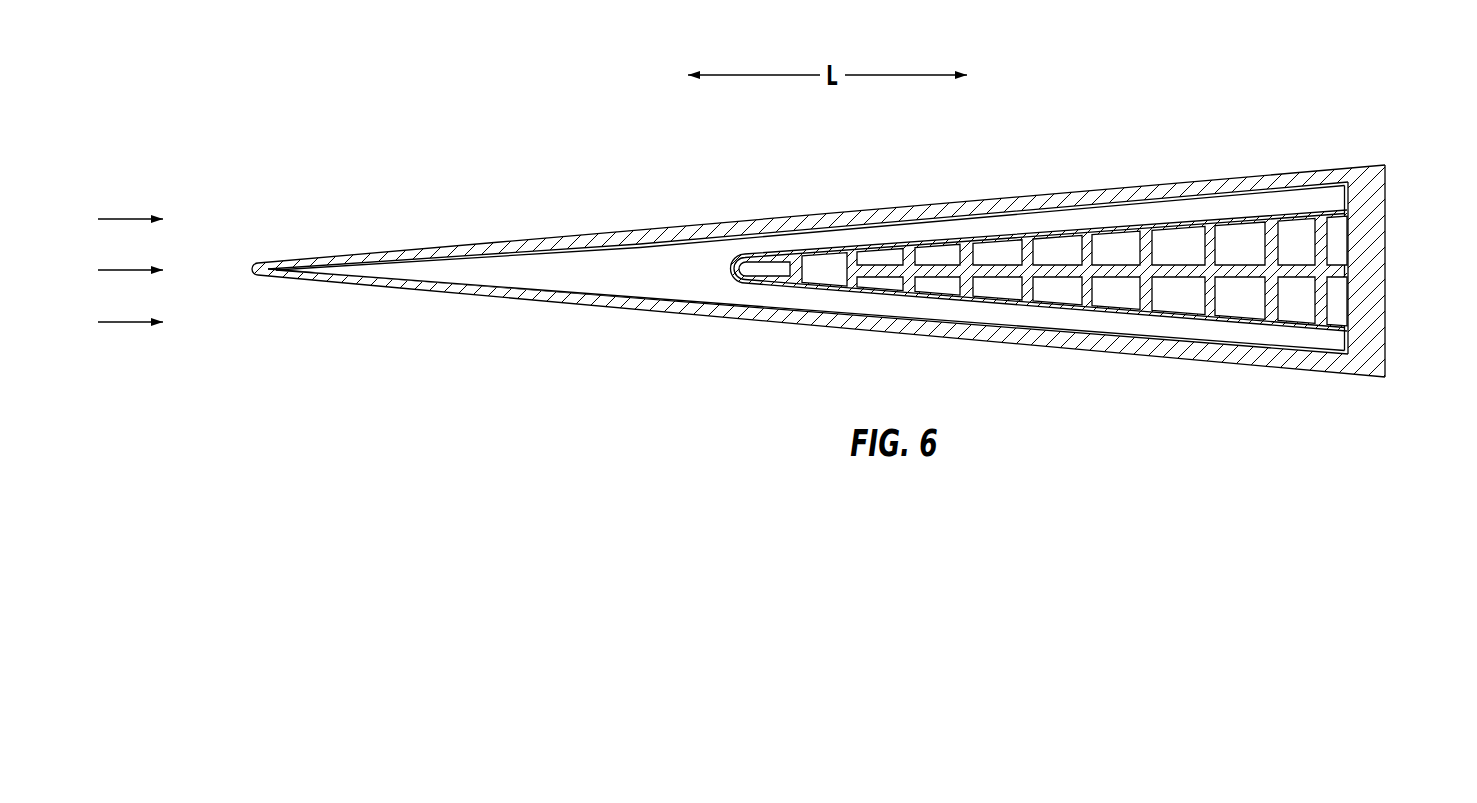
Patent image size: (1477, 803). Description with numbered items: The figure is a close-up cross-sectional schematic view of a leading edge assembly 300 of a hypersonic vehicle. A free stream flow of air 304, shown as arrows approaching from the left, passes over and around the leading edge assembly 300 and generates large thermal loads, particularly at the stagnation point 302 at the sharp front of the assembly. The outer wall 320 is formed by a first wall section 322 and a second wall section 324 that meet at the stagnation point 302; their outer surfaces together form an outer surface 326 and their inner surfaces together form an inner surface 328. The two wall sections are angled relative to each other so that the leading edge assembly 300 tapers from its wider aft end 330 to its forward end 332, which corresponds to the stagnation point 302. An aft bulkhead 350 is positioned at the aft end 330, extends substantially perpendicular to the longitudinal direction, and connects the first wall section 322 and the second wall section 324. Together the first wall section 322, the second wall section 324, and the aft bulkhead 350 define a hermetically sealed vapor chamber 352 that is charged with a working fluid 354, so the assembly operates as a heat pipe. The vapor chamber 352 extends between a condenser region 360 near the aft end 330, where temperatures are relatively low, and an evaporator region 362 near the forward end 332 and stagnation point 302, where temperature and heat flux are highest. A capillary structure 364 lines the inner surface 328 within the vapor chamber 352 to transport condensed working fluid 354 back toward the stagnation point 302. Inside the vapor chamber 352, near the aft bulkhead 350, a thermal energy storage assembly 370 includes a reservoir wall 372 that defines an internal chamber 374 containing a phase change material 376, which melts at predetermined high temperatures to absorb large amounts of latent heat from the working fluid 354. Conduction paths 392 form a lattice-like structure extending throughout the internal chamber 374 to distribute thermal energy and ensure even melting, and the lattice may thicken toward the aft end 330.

The leading edge assembly 300 is at (818, 200).
The stagnation point 302 is at (219, 225).
The free stream flow of air 304 is at (130, 316).
The outer wall 320 is at (942, 186).
The first wall section 322 is at (808, 208).
The second wall section 324 is at (892, 342).
The outer surface 326 is at (379, 209).
The inner surface 328 is at (810, 331).
The aft end 330 is at (1339, 319).
The forward end 332 is at (319, 334).
The aft bulkhead 350 is at (1410, 268).
The vapor chamber 352 is at (810, 234).
The working fluid 354 is at (808, 331).
The condenser region 360 is at (1314, 216).
The evaporator region 362 is at (458, 225).
The capillary structure 364 is at (747, 313).
The thermal energy storage assembly 370 is at (992, 167).
The reservoir wall 372 is at (1039, 315).
The internal chamber 374 is at (1085, 339).
The phase change material 376 is at (1266, 343).
The conduction paths 392 is at (1184, 211).